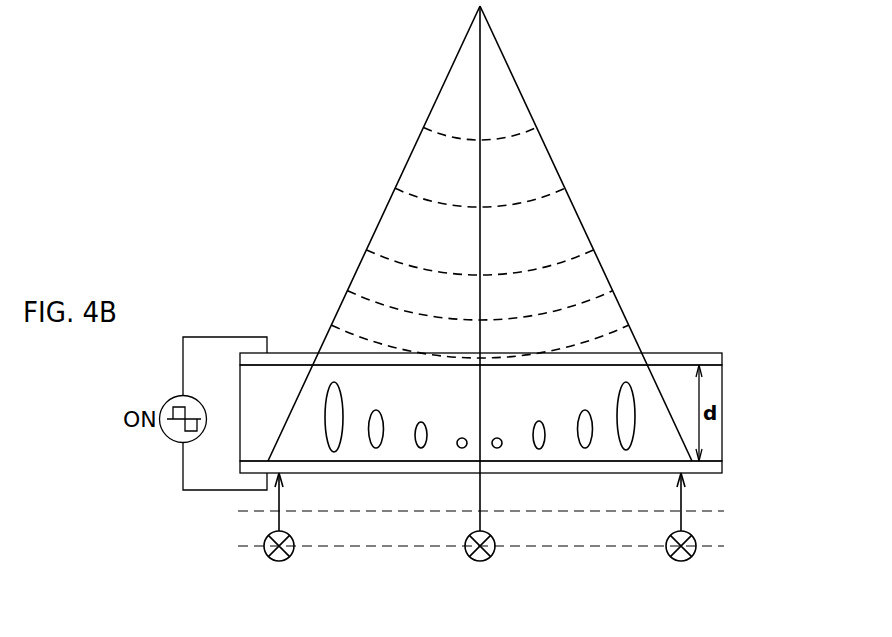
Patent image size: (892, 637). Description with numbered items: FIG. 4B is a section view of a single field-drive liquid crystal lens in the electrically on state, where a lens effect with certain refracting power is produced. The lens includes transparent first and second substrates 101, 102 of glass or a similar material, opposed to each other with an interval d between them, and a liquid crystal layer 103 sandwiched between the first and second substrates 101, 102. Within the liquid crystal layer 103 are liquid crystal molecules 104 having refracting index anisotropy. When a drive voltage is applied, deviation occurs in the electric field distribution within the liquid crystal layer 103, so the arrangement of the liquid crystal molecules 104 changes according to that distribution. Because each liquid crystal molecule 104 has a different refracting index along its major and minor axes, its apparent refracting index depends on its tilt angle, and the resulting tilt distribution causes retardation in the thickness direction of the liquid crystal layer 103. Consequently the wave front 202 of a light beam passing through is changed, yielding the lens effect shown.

The first substrate 101 is at (724, 465).
The second substrate 102 is at (724, 355).
The liquid crystal layer 103 is at (724, 382).
The liquid crystal molecules 104 is at (462, 449).
The wave front 202 is at (538, 127).